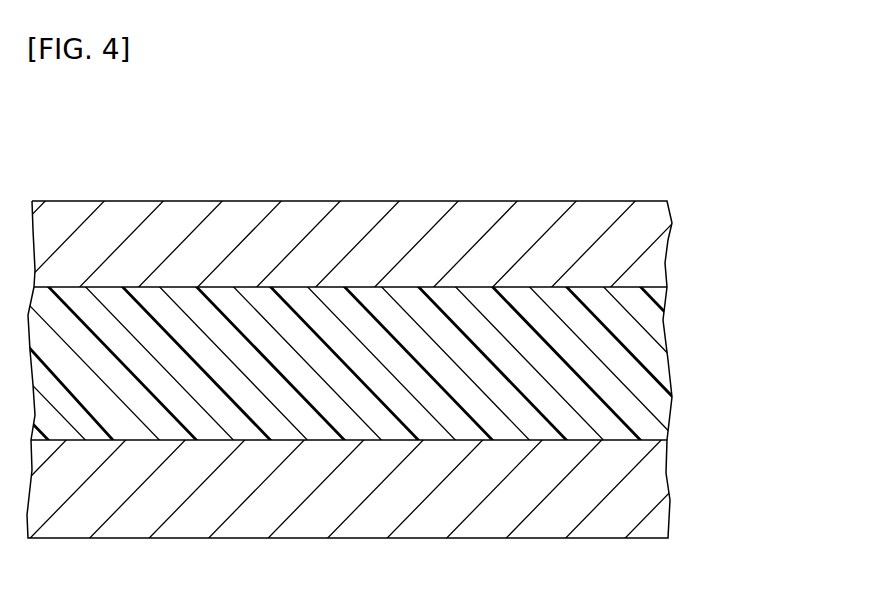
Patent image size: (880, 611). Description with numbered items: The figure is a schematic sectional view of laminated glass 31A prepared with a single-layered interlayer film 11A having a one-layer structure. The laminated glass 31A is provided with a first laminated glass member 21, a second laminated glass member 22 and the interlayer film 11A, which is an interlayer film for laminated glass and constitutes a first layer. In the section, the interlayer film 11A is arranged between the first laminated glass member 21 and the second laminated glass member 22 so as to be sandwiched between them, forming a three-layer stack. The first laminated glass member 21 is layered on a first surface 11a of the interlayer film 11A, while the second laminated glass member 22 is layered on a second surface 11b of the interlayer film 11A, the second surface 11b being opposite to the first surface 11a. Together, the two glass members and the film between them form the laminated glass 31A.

The laminated glass 31A is at (399, 334).
The second laminated glass member 22 is at (670, 237).
The first laminated glass member 21 is at (667, 473).
The interlayer film 11A is at (399, 363).
The second surface 11b is at (363, 287).
The first surface 11a is at (362, 442).